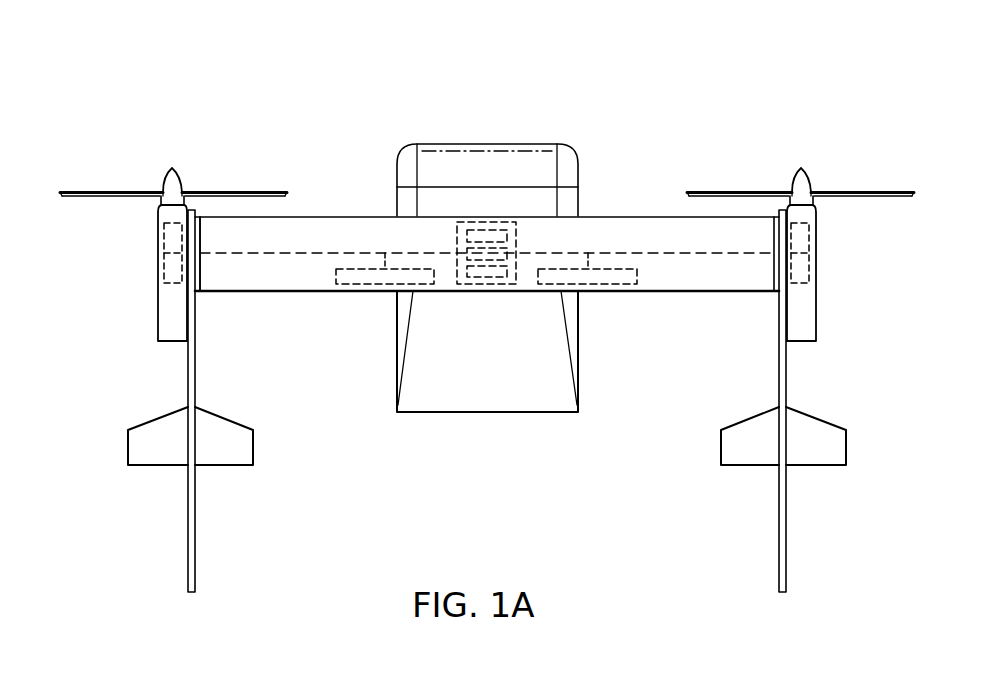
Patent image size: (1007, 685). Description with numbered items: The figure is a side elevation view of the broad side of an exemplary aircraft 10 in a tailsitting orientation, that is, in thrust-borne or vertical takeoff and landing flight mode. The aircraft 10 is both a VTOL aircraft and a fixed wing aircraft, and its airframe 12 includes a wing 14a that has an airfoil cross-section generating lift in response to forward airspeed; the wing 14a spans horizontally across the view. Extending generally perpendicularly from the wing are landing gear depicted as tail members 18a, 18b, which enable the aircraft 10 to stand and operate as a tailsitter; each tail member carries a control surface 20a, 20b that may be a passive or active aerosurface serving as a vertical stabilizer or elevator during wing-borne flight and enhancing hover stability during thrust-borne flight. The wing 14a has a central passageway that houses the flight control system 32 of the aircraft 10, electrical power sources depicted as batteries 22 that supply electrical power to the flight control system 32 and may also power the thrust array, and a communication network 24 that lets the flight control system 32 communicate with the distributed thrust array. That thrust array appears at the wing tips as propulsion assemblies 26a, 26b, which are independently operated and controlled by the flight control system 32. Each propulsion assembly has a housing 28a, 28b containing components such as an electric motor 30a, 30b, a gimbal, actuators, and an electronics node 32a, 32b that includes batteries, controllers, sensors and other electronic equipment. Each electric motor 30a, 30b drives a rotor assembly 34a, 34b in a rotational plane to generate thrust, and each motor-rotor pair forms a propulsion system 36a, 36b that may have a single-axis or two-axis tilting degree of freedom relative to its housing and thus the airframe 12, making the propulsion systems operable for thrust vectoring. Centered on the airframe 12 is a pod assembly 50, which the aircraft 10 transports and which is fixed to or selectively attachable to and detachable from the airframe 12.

The aircraft 10 is at (325, 66).
The airframe 12 is at (674, 300).
The wing 14a is at (288, 292).
The tail member 18a is at (188, 530).
The tail member 18b is at (786, 528).
The control surface 20a is at (128, 446).
The control surface 20b is at (846, 446).
The batteries 22 is at (600, 293).
The communication network 24 is at (340, 247).
The propulsion assembly 26a is at (168, 331).
The propulsion assembly 26b is at (806, 331).
The housing 28a is at (168, 296).
The housing 28b is at (806, 296).
The electric motor 30a is at (166, 238).
The electric motor 30b is at (808, 238).
The flight control system 32 is at (488, 293).
The electronics node 32a is at (166, 273).
The electronics node 32b is at (808, 273).
The rotor assembly 34a is at (222, 191).
The rotor assembly 34b is at (752, 191).
The propulsion system 36a is at (172, 158).
The propulsion system 36b is at (801, 158).
The pod assembly 50 is at (488, 144).